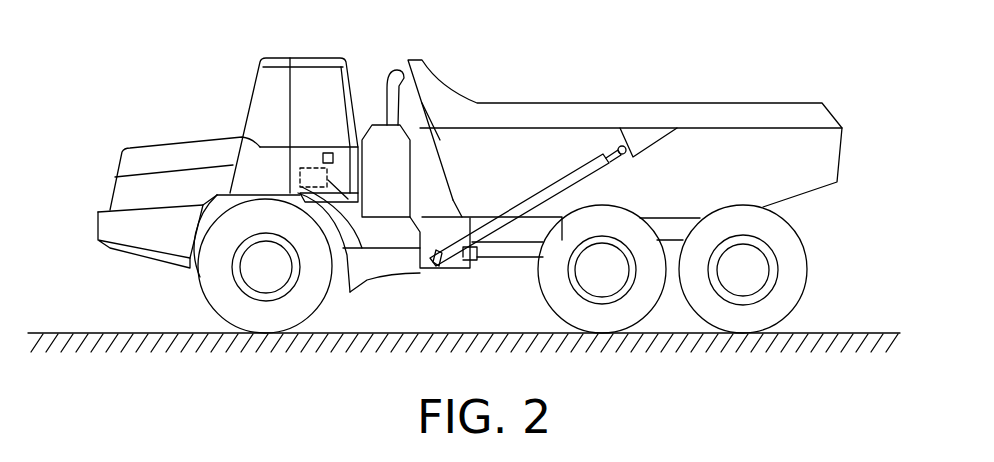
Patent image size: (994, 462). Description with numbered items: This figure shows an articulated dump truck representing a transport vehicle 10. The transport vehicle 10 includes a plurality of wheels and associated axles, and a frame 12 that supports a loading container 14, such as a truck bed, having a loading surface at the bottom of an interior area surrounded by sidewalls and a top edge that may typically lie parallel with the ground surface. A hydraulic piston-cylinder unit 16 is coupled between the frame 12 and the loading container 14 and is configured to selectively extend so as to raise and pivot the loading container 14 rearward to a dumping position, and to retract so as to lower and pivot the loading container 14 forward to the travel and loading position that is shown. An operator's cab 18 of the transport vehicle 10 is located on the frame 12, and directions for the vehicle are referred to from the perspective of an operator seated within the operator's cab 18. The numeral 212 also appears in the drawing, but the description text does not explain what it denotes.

The transport vehicle 10 is at (98, 150).
The frame 12 is at (141, 220).
The loading container 14 is at (773, 103).
The hydraulic piston-cylinder unit 16 is at (505, 218).
The operator's cab 18 is at (265, 123).
The sensor mounted on front frame 212 is at (362, 252).